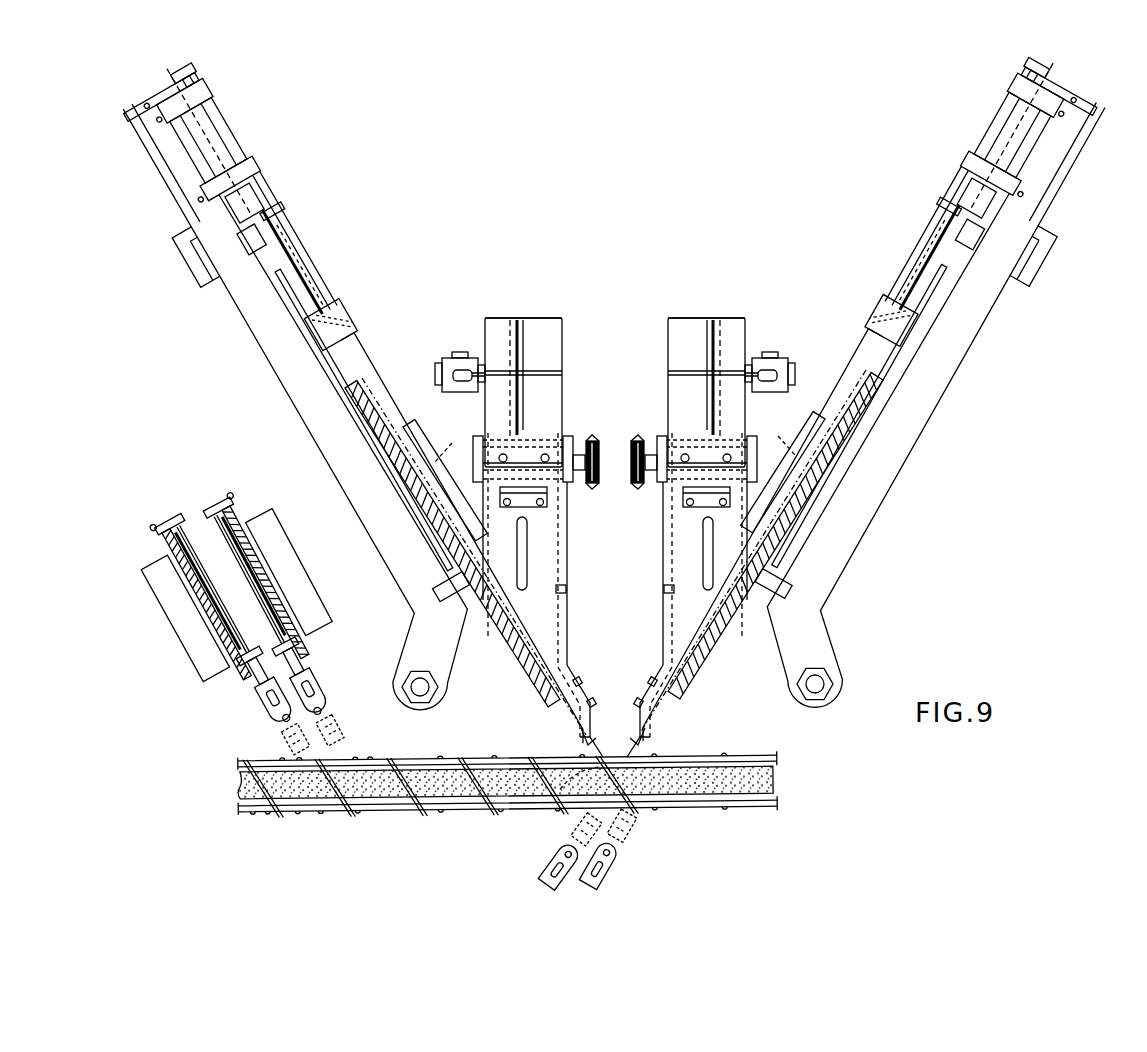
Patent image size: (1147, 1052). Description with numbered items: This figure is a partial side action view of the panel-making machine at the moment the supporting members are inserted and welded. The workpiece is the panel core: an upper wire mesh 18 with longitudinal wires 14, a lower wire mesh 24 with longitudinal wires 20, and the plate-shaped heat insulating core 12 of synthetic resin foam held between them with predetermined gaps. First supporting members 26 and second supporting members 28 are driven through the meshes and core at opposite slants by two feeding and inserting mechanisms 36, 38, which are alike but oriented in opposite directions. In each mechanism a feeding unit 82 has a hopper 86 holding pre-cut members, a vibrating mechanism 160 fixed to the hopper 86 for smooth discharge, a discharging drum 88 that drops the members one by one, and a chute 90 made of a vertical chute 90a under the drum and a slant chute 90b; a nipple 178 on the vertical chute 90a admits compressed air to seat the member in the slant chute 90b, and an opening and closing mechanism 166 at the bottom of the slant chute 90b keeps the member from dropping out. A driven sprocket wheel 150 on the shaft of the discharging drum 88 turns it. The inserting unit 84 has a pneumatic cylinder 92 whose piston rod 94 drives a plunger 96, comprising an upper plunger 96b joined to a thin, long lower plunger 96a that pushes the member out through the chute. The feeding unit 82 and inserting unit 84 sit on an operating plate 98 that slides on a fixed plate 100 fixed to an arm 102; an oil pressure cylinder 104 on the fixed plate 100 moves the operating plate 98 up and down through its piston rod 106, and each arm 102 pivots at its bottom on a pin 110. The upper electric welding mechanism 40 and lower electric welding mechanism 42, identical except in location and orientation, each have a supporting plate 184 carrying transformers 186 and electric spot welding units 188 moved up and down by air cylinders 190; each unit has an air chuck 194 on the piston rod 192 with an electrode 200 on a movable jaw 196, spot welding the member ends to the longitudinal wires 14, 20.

The heat insulating core 12 is at (775, 778).
The longitudinal wires 14 is at (238, 760).
The upper wire mesh 18 is at (765, 754).
The longitudinal wires 20 is at (240, 812).
The lower wire mesh 24 is at (775, 810).
The first supporting members 26 is at (318, 815).
The second supporting members 28 is at (362, 815).
The feeding and inserting mechanism 36 is at (798, 238).
The feeding and inserting mechanism 38 is at (430, 238).
The upper electric welding mechanism 40 is at (193, 482).
The lower electric welding mechanism 42 is at (548, 895).
The feeding unit 82 is at (514, 316).
The inserting unit 84 is at (336, 290).
The hopper 86 is at (558, 346).
The discharging drum 88 is at (560, 500).
The chute 90 is at (568, 568).
The vertical chute 90a is at (567, 626).
The slant chute 90b is at (591, 730).
The pneumatic cylinder 92 is at (260, 197).
The piston rod 94 is at (292, 252).
The plunger 96 is at (380, 371).
The lower plunger 96a is at (583, 744).
The upper plunger 96b is at (614, 475).
The operating plate 98 is at (355, 428).
The fixed plate 100 is at (378, 455).
The arm 102 is at (352, 510).
The oil pressure cylinder 104 is at (156, 165).
The piston rod 106 is at (280, 273).
The pin 110 is at (430, 692).
The driven sprocket wheels 150 is at (592, 439).
The vibrating mechanisms 160 is at (461, 355).
The opening and closing mechanism 166 is at (646, 681).
The nipple 178 is at (567, 590).
The supporting plates 184 is at (157, 525).
The transformers 186 is at (162, 583).
The electric spot welding units 188 is at (280, 722).
The air cylinders 190 is at (208, 588).
The piston rod 192 is at (234, 657).
The air chuck 194 is at (263, 683).
The movable jaw 196 is at (272, 705).
The electrode 200 is at (298, 738).